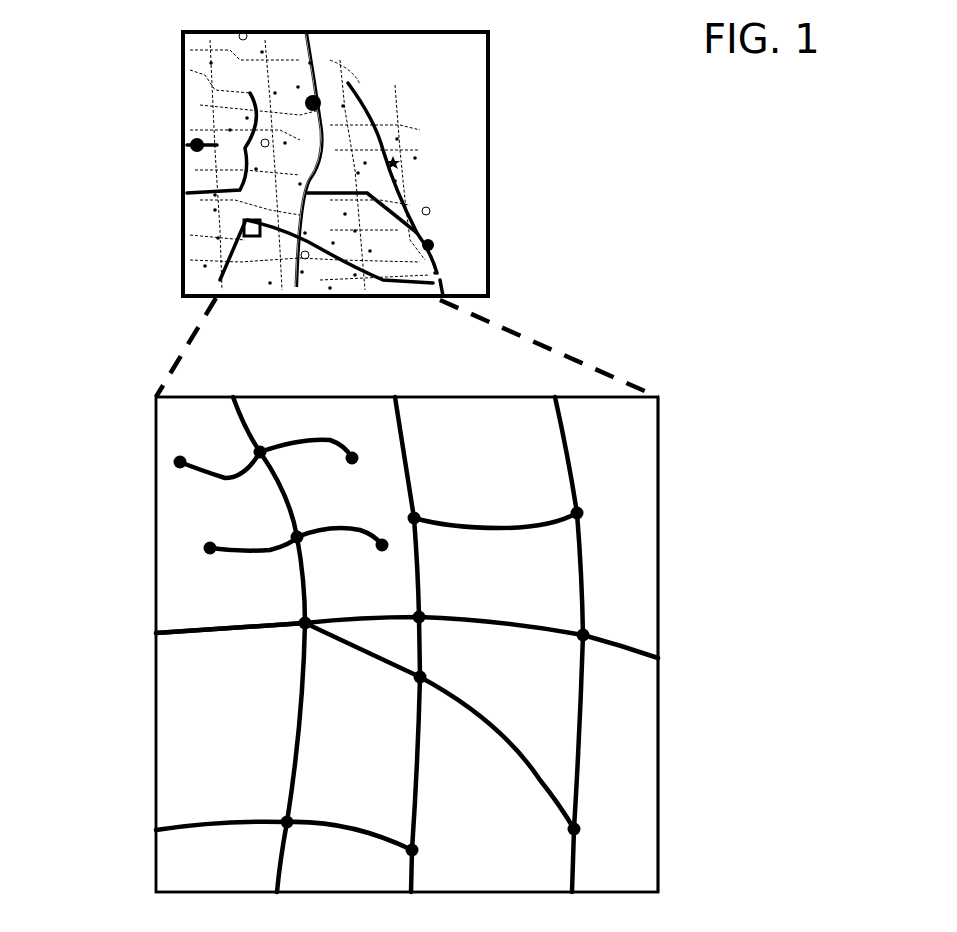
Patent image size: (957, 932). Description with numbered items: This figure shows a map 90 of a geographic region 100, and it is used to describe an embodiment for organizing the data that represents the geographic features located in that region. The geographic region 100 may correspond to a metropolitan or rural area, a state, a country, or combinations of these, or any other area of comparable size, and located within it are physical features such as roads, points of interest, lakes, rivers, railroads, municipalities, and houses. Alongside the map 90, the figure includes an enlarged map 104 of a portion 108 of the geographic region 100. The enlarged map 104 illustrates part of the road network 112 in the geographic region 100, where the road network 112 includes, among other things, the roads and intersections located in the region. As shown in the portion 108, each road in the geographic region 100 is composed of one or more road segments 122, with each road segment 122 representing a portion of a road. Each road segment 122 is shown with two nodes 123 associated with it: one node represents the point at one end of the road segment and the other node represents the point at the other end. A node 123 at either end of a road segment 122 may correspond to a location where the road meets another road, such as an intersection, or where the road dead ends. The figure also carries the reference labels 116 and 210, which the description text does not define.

The map 90 is at (270, 164).
The geographic region 100 is at (443, 67).
The enlarged map 104 is at (671, 452).
The portion 108 is at (653, 60).
The road network 112 is at (232, 645).
The region 116 is at (769, 723).
The road segment 122 is at (418, 463).
The node 123 is at (171, 453).
The boundary 210 is at (667, 540).